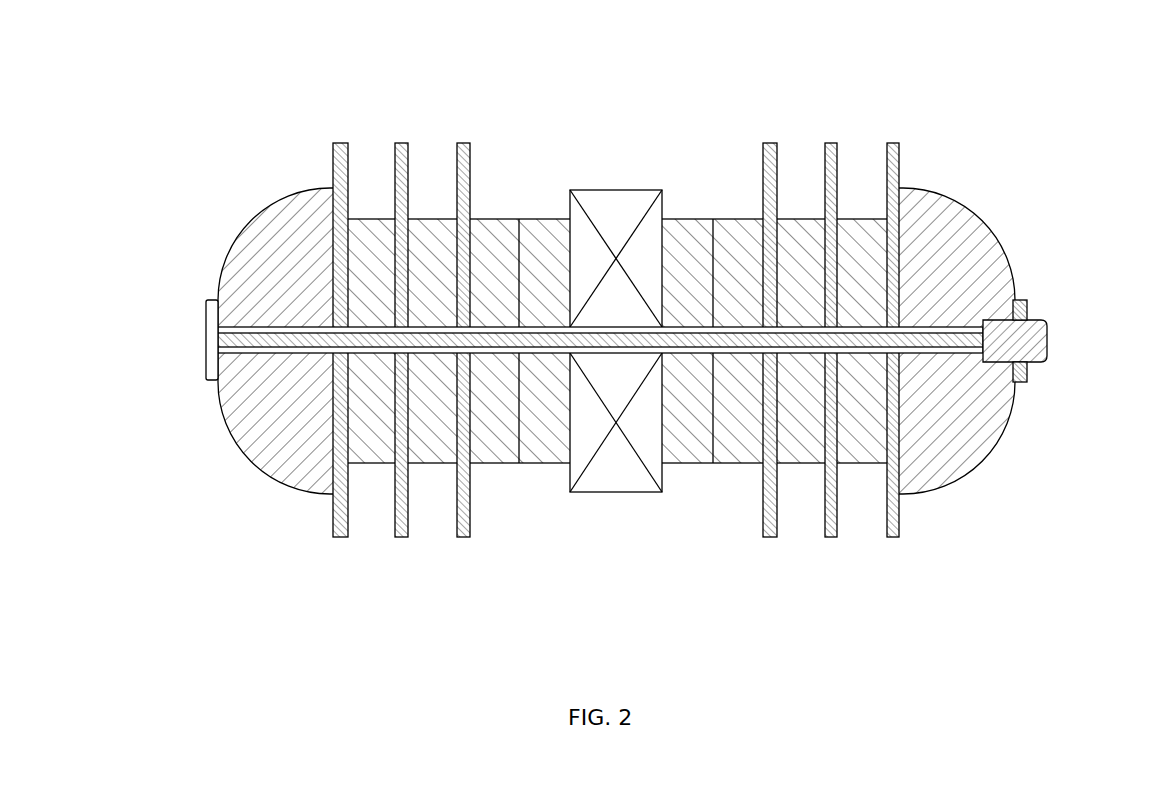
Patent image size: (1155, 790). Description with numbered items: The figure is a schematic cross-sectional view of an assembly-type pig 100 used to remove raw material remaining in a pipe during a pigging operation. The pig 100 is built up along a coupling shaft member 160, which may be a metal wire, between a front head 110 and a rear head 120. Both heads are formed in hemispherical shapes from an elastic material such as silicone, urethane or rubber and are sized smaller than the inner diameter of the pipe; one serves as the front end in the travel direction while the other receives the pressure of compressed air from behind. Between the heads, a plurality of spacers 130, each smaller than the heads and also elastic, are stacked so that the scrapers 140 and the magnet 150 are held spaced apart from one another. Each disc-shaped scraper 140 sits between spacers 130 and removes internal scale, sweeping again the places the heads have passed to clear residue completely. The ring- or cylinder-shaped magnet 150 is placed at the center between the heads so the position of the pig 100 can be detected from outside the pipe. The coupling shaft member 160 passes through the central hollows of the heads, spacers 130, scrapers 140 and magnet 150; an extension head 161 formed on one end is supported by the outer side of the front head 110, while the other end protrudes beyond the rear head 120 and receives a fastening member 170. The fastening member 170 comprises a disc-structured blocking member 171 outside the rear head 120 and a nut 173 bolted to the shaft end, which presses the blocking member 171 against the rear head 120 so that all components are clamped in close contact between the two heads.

The pig 100 is at (634, 39).
The front head 110 is at (265, 222).
The rear head 120 is at (967, 220).
The spacer 130 is at (373, 237).
The scraper 140 is at (771, 143).
The magnet 150 is at (612, 200).
The coupling shaft member 160 is at (548, 340).
The extension head 161 is at (210, 322).
The fastening member 170 is at (1069, 348).
The blocking member 171 is at (1030, 370).
The nut 173 is at (1045, 322).